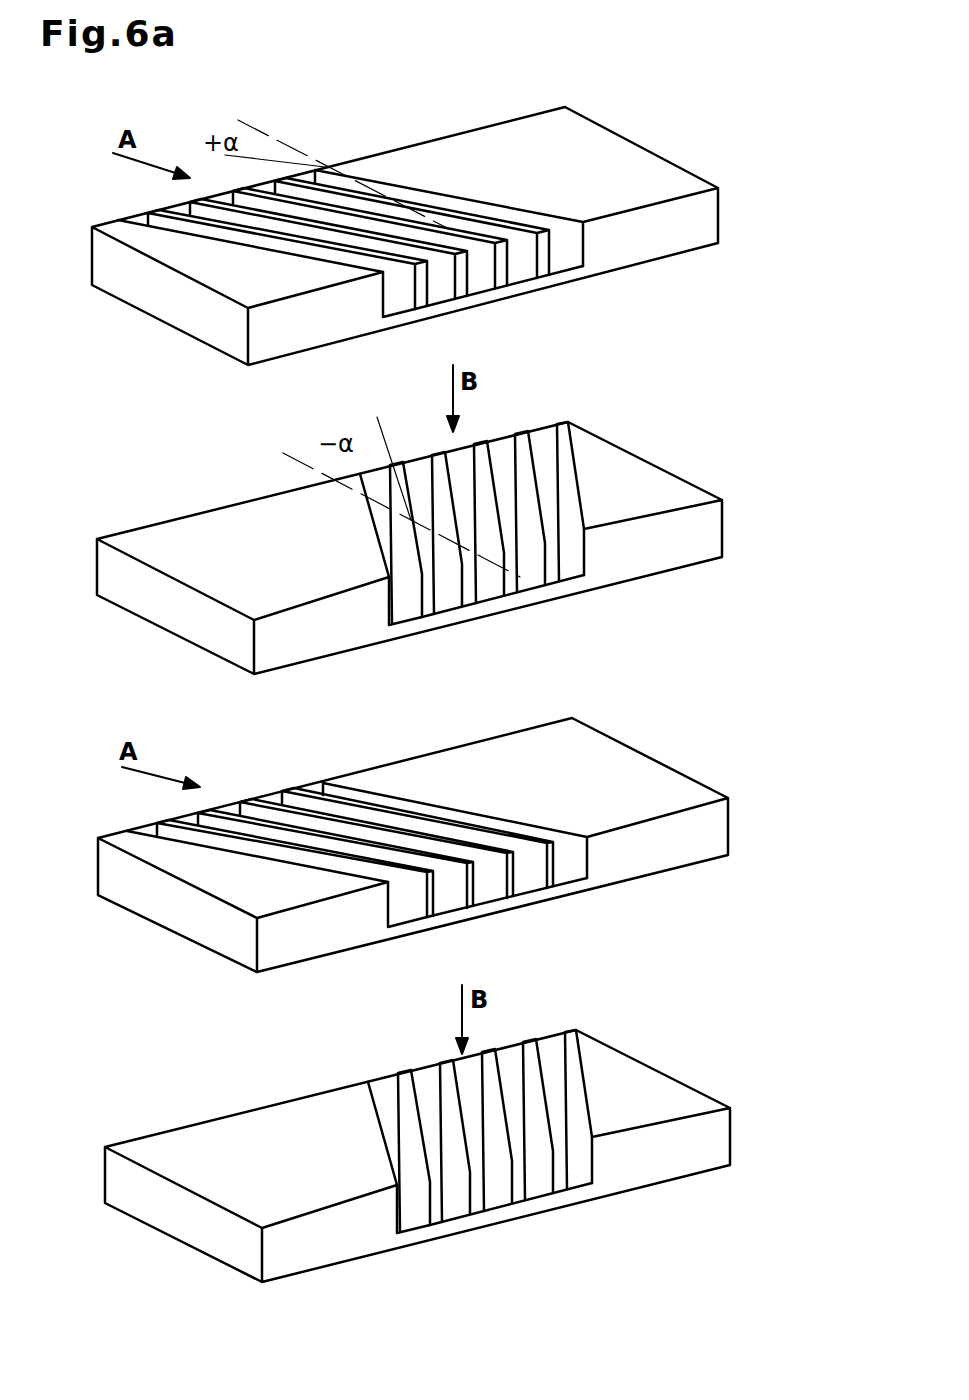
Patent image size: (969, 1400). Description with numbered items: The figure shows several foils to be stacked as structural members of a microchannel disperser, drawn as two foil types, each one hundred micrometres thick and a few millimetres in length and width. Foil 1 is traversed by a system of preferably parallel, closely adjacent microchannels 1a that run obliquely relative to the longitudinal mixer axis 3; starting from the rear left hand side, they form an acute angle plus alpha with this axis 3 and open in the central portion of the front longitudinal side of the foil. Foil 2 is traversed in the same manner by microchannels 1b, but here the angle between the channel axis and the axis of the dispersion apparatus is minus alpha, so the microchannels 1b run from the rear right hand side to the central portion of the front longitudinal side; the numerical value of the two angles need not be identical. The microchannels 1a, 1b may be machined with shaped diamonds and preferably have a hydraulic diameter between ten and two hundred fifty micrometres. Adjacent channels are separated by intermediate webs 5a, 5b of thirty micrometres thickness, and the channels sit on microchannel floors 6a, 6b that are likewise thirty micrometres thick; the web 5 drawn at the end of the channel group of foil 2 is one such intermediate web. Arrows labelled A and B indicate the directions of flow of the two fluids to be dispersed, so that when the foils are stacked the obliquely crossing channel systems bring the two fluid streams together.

The foil 1 is at (643, 170).
The microchannels 1a is at (562, 252).
The intermediate webs 5a is at (547, 240).
The microchannel floor 6a is at (400, 328).
The longitudinal mixer axis 3 is at (278, 148).
The foil 2 is at (622, 462).
The microchannels 1b is at (555, 565).
The intermediate webs 5b is at (552, 554).
The microchannel floor 6b is at (402, 630).
The rib 5 is at (575, 1170).